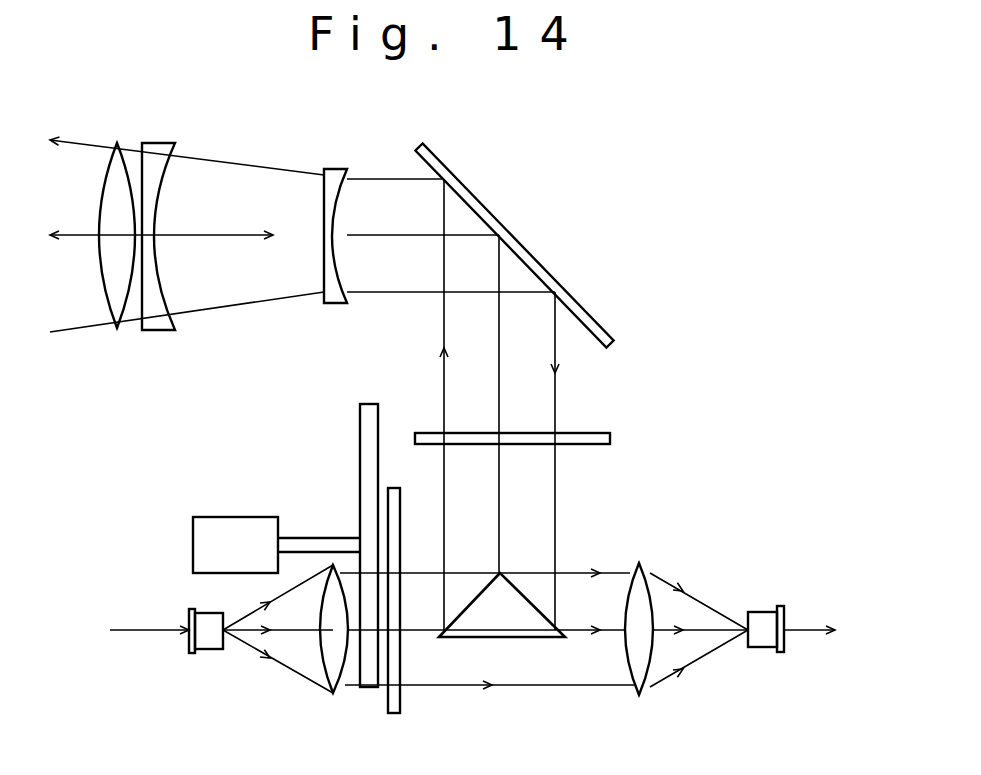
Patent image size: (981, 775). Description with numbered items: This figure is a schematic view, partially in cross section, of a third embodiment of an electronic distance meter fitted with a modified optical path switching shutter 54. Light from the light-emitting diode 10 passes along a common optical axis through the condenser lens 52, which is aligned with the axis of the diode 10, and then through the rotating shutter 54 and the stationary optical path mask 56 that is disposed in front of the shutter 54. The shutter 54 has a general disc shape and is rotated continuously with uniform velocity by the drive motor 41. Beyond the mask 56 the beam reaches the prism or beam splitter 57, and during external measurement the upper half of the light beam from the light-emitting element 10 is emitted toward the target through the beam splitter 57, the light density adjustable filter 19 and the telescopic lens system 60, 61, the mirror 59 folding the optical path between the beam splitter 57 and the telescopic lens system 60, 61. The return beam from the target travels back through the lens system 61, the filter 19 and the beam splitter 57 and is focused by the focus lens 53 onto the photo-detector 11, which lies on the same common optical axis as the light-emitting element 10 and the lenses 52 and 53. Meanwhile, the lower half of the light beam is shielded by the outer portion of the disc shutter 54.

The light-emitting diode 10 is at (207, 612).
The photo-detector 11 is at (767, 612).
The light density adjustable filter 19 is at (597, 433).
The drive motor 41 is at (227, 517).
The condenser lens 52 is at (330, 692).
The focus lens 53 is at (642, 568).
The optical path switching shutter 54 is at (360, 440).
The optical path mask 56 is at (400, 700).
The prism or beam splitter 57 is at (527, 595).
The mirror 59 is at (547, 265).
The telescopic lens system 60 is at (335, 168).
The telescopic lens system 61 is at (130, 337).